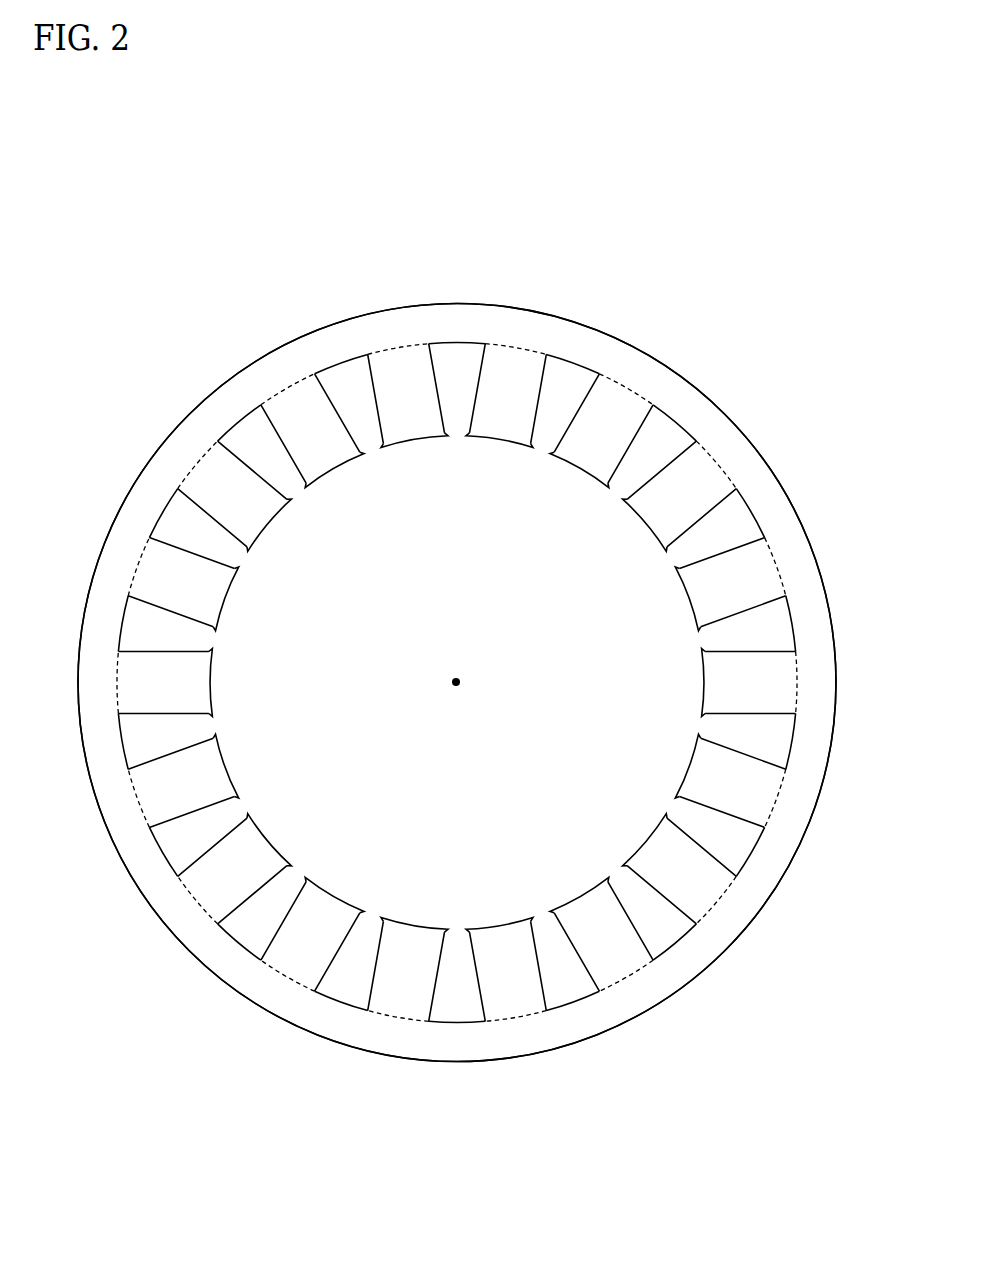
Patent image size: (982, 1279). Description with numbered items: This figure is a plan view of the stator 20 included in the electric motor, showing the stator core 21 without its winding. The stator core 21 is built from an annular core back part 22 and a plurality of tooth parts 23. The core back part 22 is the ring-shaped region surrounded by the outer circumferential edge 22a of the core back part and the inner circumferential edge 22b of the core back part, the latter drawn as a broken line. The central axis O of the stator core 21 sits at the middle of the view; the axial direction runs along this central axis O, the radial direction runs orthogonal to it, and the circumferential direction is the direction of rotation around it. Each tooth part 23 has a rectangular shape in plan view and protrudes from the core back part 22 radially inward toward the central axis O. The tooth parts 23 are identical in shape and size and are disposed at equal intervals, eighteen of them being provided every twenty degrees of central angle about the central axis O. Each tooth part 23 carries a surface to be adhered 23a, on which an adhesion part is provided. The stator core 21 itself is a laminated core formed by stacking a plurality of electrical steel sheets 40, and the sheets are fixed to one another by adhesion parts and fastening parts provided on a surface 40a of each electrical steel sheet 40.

The stator 20 is at (762, 168).
The stator core 21 is at (682, 230).
The core back part 22 is at (647, 370).
The outer circumferential edge of the core back part 22a is at (327, 325).
The inner circumferential edge of the core back part 22b is at (392, 347).
The tooth part 23 is at (593, 397).
The surface to be adhered of the tooth part 23a is at (507, 393).
The electrical steel sheet 40 is at (228, 400).
The surface of the electrical steel sheet 40a is at (297, 363).
The central axis O is at (460, 677).